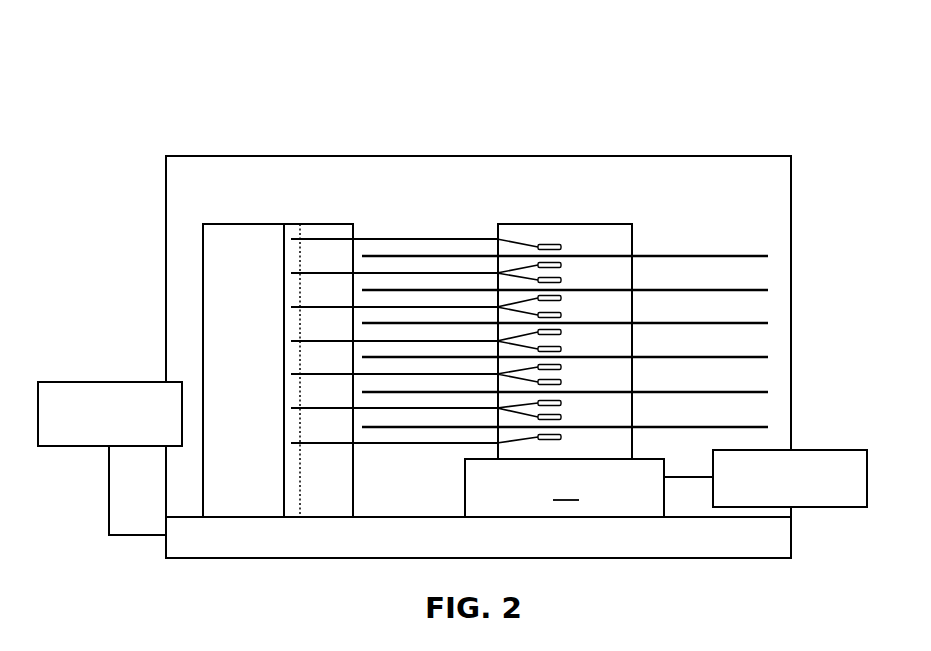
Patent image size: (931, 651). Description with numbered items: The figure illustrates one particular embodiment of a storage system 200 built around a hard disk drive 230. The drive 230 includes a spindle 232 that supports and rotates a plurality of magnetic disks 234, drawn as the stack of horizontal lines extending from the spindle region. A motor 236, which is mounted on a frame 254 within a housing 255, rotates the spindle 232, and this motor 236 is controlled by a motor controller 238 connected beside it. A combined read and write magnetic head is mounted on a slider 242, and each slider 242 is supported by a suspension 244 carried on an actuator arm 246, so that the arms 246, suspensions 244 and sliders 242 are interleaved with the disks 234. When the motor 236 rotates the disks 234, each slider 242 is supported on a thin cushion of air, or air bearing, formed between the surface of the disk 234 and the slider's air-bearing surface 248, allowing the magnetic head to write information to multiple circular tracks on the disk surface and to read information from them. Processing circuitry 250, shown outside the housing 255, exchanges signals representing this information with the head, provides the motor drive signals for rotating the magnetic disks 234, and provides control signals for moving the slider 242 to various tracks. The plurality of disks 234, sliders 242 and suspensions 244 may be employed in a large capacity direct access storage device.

The storage system 200 is at (143, 108).
The hard disk drive 230 is at (683, 226).
The spindle 232 is at (621, 224).
The magnetic disks 234 is at (768, 256).
The motor 236 is at (589, 488).
The motor controller 238 is at (826, 507).
The slider 242 is at (562, 265).
The suspension 244 is at (536, 250).
The actuator arm 246 is at (467, 273).
The air-bearing surface 248 is at (552, 388).
The processing circuitry 250 is at (82, 382).
The frame 254 is at (222, 558).
The housing 255 is at (731, 156).